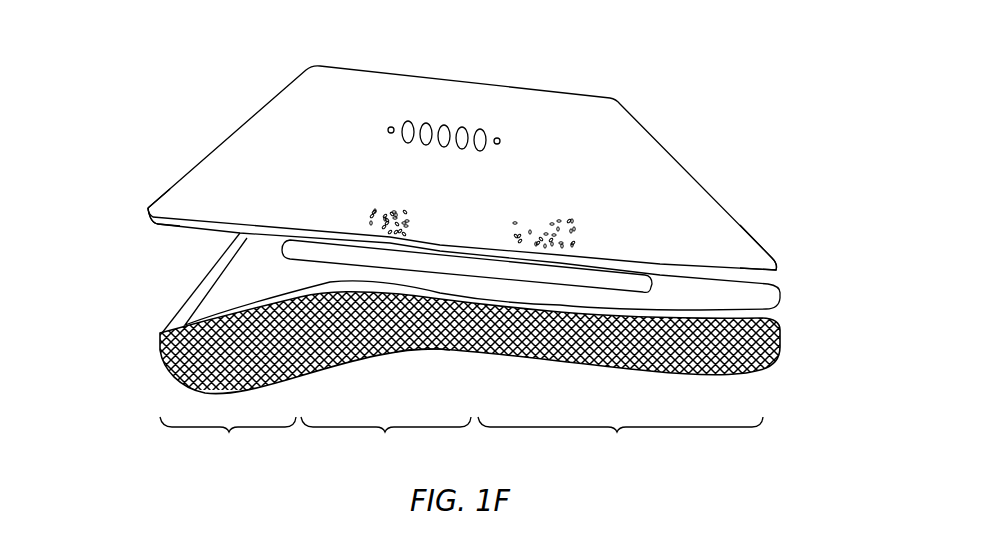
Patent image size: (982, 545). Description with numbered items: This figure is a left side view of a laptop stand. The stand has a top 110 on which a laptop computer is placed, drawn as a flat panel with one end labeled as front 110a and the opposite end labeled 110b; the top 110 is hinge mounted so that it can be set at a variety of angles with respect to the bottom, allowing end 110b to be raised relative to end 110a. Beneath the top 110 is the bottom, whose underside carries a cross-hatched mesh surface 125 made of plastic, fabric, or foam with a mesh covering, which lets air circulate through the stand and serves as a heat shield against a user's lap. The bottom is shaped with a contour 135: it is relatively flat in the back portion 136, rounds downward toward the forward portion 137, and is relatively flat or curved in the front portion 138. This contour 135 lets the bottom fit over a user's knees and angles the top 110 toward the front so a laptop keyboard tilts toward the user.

The top 110 is at (592, 188).
The front of the laptop stand 110a is at (778, 259).
The front of the top 110b is at (147, 210).
The mesh surface 125 is at (787, 343).
The contour 135 is at (418, 352).
The back portion 136 is at (620, 439).
The forward portion 137 is at (386, 442).
The front portion 138 is at (228, 442).